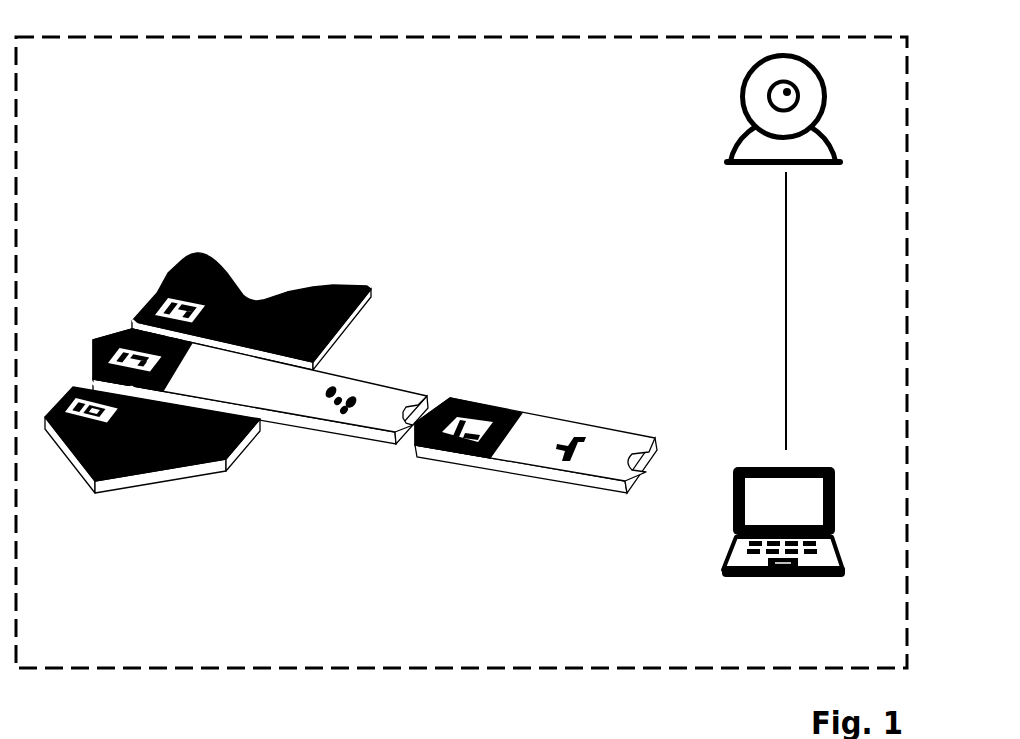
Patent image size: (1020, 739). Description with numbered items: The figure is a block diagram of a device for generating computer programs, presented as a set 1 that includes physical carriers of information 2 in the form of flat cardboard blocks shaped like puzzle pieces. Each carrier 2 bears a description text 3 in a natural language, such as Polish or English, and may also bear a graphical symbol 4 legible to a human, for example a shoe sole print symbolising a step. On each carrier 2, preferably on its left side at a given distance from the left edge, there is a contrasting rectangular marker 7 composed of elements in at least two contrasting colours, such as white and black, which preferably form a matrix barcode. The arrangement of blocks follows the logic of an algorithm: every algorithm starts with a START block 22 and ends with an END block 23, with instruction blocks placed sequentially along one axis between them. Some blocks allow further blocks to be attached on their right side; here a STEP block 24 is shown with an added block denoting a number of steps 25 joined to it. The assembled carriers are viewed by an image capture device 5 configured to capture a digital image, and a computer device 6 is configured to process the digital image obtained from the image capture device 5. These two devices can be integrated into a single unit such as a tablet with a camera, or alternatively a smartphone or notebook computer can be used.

The set 1 is at (342, 36).
The physical carrier of information 2 is at (351, 379).
The description text 3 is at (267, 322).
The graphical symbol 4 is at (352, 414).
The image capture device 5 is at (828, 122).
The computer device 6 is at (830, 465).
The contrasting rectangular marker 7 is at (162, 302).
The START block 22 is at (235, 281).
The END block 23 is at (112, 481).
The STEP block 24 is at (366, 378).
The block denoting a number of steps 25 is at (552, 417).